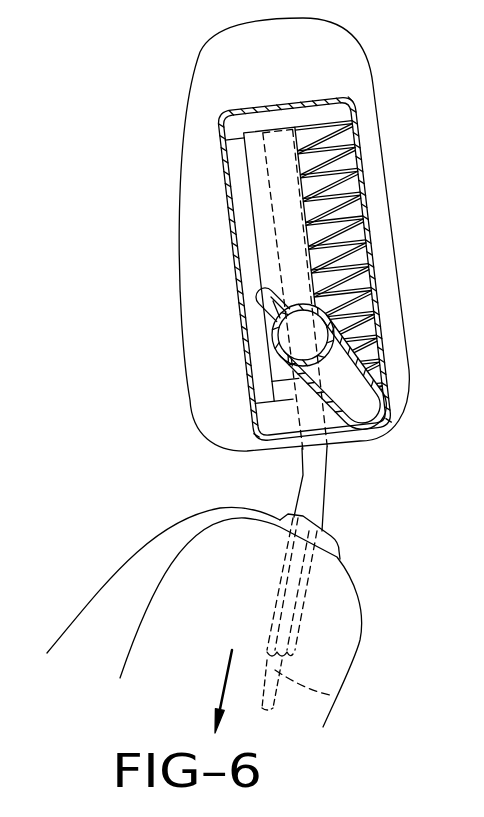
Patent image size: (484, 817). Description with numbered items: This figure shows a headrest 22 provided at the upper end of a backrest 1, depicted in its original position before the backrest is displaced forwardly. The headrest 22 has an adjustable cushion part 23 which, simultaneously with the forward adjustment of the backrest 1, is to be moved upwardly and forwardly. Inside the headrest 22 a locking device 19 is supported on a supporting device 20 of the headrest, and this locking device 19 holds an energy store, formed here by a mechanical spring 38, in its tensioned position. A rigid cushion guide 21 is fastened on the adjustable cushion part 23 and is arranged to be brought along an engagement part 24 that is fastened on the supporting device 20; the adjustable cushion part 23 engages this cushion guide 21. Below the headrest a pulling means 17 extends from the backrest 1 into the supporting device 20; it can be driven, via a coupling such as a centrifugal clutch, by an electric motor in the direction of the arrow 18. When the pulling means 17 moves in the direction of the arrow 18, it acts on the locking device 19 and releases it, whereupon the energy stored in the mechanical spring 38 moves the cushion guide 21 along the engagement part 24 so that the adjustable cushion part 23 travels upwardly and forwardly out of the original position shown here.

The backrest 1 is at (197, 592).
The pulling means 17 is at (338, 698).
The arrow 18 is at (227, 680).
The locking device 19 is at (283, 126).
The supporting device 20 is at (314, 485).
The cushion guide 21 is at (380, 418).
The headrest 22 is at (172, 260).
The adjustable cushion part 23 is at (337, 65).
The engagement part 24 is at (297, 336).
The mechanical spring 38 is at (343, 197).